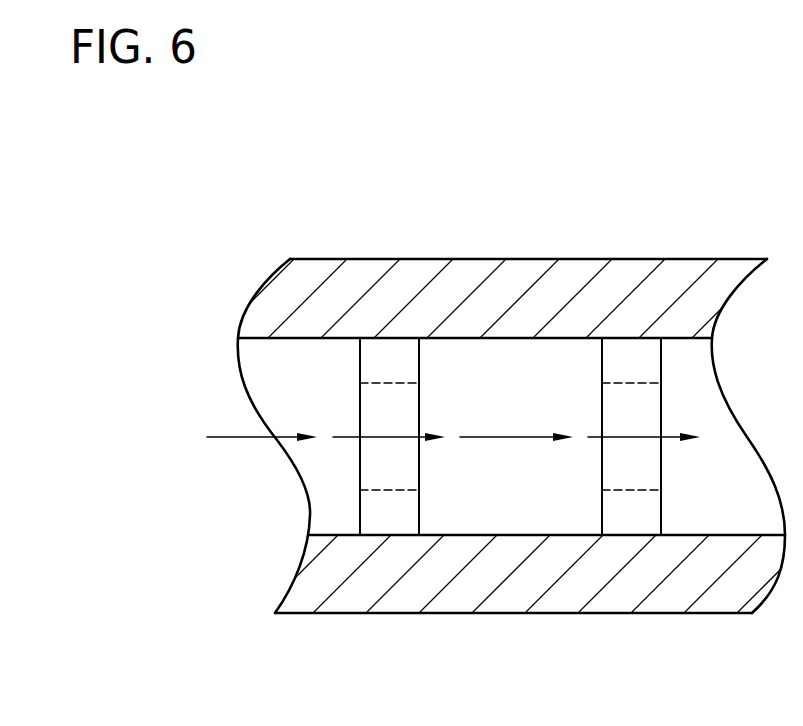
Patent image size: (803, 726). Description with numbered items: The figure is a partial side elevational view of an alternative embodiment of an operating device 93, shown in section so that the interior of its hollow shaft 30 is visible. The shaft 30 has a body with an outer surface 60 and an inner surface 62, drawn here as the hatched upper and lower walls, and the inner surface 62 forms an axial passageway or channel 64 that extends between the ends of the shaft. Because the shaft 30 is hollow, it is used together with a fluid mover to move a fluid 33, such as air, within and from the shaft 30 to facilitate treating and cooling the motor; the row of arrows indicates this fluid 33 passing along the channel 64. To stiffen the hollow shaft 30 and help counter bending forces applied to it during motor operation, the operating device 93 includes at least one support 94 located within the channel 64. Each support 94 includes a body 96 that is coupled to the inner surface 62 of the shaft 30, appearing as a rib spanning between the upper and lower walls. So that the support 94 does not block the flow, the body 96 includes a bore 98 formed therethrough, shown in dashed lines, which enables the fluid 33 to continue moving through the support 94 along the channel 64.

The operating device 93 is at (477, 408).
The hollow shaft 30 is at (477, 403).
The outer surface 60 is at (362, 260).
The inner surface 62 is at (288, 338).
The channel 64 is at (532, 399).
The fluid 33 is at (505, 438).
The support 94 is at (330, 506).
The body 96 is at (385, 514).
The bore 98 is at (377, 488).